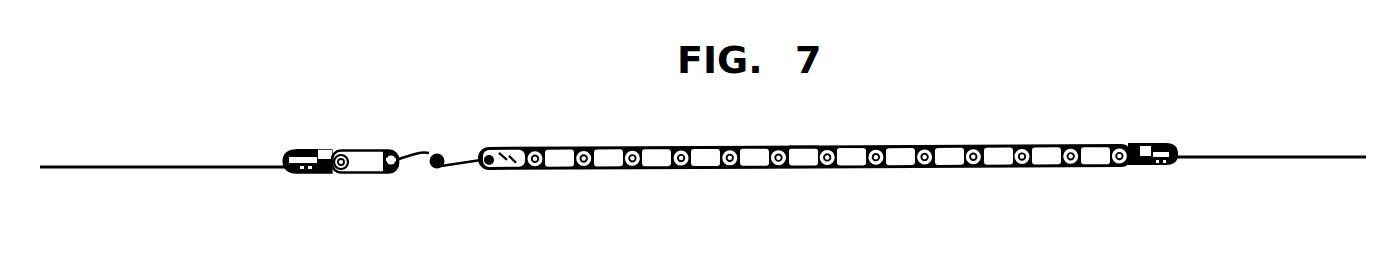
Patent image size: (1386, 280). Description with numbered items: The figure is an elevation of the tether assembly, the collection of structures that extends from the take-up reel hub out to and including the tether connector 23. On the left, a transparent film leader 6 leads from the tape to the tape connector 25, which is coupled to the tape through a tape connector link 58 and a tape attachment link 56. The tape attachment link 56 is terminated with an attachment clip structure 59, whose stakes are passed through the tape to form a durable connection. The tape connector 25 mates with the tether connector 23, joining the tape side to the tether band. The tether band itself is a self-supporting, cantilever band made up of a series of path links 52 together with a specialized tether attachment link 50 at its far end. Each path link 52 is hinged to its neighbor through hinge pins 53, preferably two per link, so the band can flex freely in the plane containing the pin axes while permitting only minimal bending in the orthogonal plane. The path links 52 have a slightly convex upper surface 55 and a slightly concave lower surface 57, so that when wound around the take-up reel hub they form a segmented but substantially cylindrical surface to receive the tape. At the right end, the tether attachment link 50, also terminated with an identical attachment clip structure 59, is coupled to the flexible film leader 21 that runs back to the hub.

The transparent film leader 6 is at (150, 166).
The flexible film leader 21 is at (1226, 156).
The tether connector 23 is at (459, 169).
The tape connector 25 is at (412, 166).
The tether attachment link 50 is at (1135, 143).
The path link 52 is at (751, 171).
The hinge pin 53 is at (878, 152).
The convex upper surface 55 is at (803, 149).
The tape attachment link 56 is at (320, 150).
The concave lower surface 57 is at (856, 171).
The tape connector link 58 is at (357, 173).
The attachment clip structure 59 is at (303, 174).